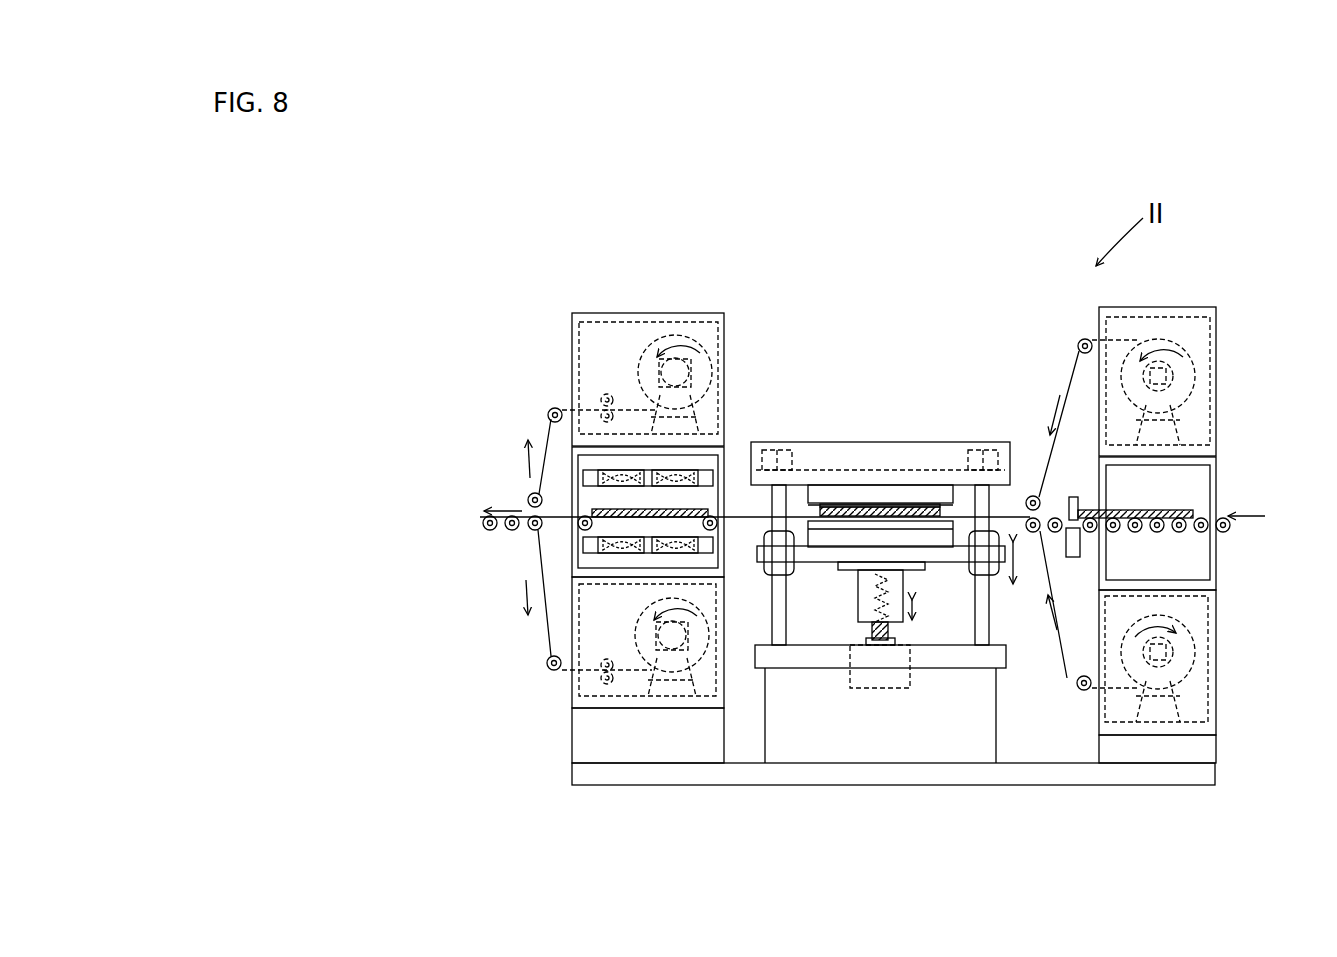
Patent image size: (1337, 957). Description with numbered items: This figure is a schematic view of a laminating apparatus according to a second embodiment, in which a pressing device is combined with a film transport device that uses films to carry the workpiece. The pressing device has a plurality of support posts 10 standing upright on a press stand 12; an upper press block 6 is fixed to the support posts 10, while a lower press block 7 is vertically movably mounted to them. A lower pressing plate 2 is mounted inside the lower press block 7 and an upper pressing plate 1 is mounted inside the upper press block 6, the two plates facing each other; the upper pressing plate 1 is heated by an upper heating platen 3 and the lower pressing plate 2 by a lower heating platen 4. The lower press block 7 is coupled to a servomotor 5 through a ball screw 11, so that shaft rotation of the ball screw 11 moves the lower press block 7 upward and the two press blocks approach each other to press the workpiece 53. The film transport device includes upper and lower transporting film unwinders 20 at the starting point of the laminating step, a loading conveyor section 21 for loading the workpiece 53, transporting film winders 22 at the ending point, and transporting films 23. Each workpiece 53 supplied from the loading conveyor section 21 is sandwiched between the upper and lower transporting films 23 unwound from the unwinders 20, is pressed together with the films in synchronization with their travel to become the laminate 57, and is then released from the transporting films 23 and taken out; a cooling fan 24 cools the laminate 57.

The second (upper) pressing plate 1 is at (928, 507).
The first (lower) pressing plate 2 is at (935, 527).
The second (upper) heating platen 3 is at (860, 492).
The first (lower) heating platen 4 is at (920, 540).
The servomotor 5 is at (885, 680).
The second (upper) press block 6 is at (818, 478).
The first (lower) press block 7 is at (802, 553).
The support posts 10 is at (778, 497).
The ball screw 11 is at (866, 628).
The press stand 12 is at (815, 658).
The transporting film unwinders 20 is at (1167, 372).
The loading conveyor section 21 is at (1157, 528).
The transporting film winders 22 is at (656, 357).
The transporting films 23 is at (547, 431).
The cooling fan 24 is at (625, 470).
The workpiece 53 is at (898, 507).
The laminate 57 is at (637, 515).